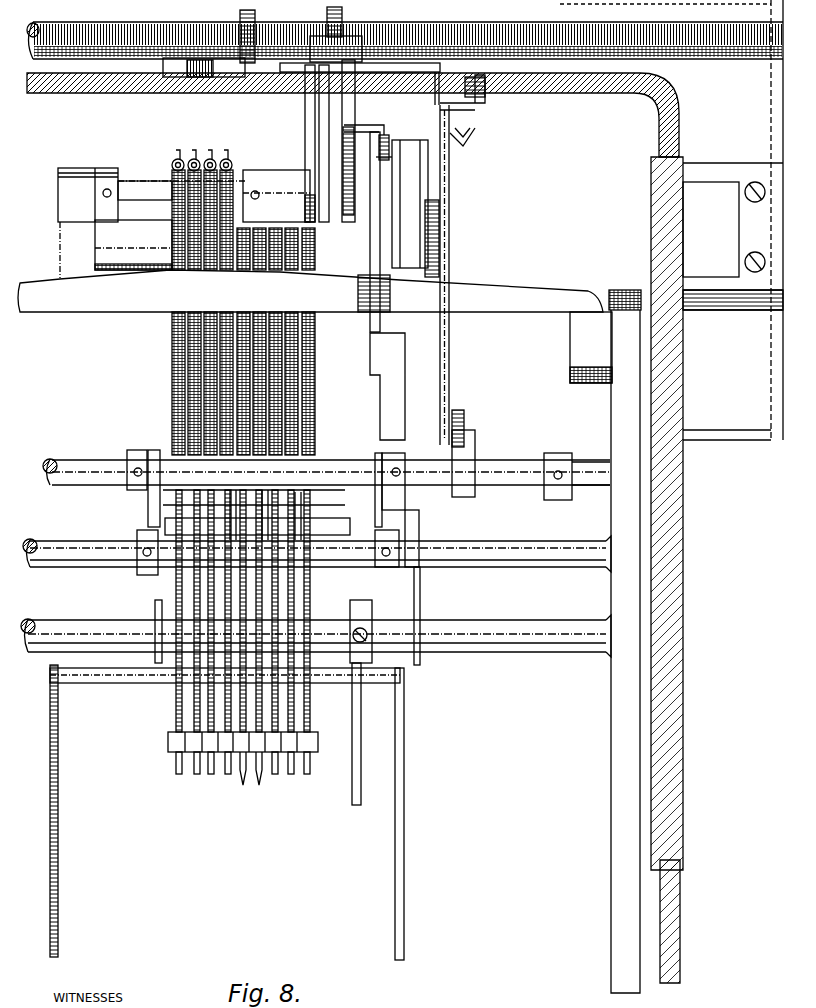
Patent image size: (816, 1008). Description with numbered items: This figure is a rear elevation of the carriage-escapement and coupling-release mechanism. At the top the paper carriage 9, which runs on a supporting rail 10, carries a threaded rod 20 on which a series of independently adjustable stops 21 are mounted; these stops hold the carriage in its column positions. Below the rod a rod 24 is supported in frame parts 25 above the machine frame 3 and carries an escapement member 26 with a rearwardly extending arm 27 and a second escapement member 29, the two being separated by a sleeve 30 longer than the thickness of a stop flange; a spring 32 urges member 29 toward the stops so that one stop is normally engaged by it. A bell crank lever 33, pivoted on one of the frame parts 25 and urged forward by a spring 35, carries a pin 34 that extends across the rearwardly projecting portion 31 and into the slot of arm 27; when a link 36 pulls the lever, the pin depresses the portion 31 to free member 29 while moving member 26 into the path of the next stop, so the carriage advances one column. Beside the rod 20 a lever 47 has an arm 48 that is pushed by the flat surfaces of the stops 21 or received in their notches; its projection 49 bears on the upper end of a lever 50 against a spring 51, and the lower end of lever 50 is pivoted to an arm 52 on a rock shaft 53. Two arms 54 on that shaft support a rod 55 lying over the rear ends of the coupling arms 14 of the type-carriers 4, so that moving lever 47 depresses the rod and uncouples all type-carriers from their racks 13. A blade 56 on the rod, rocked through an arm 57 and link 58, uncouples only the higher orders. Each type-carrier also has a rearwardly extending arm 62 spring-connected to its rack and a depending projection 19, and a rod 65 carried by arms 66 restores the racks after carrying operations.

The threaded rod 20 is at (123, 29).
The stops 21 is at (240, 16).
The arm 48 is at (345, 40).
The lever 47 is at (397, 63).
The paper carriage 9 is at (771, 113).
The supporting rail 10 is at (741, 288).
The rod 24 is at (128, 190).
The frame 3 is at (130, 258).
The frame parts 25 is at (62, 232).
The rearwardly extending arm 62 is at (211, 157).
The escapement member 26 is at (313, 100).
The rearwardly extending arm 27 is at (313, 137).
The escapement member 29 is at (356, 103).
The pin 34 is at (340, 156).
The rearwardly projecting portion 31 is at (362, 123).
The spring 32 is at (389, 135).
The bell crank lever 33 is at (380, 242).
The link 36 is at (372, 353).
The spring 35 is at (392, 203).
The sleeve 30 is at (335, 212).
The lever 50 is at (450, 205).
The projection 49 is at (487, 106).
The spring 51 is at (465, 147).
The blade 56 is at (295, 503).
The arms 54 is at (147, 500).
The arm 52 is at (472, 447).
The rock shaft 53 is at (528, 462).
The coupling arm 14 is at (285, 523).
The rod 55 is at (419, 518).
The arm 57 is at (430, 533).
The type-carriers 4 is at (197, 597).
The link 58 is at (421, 660).
The rod 65 is at (117, 680).
The arms 66 is at (58, 826).
The rack 13 is at (197, 687).
The depending projection 19 is at (245, 772).